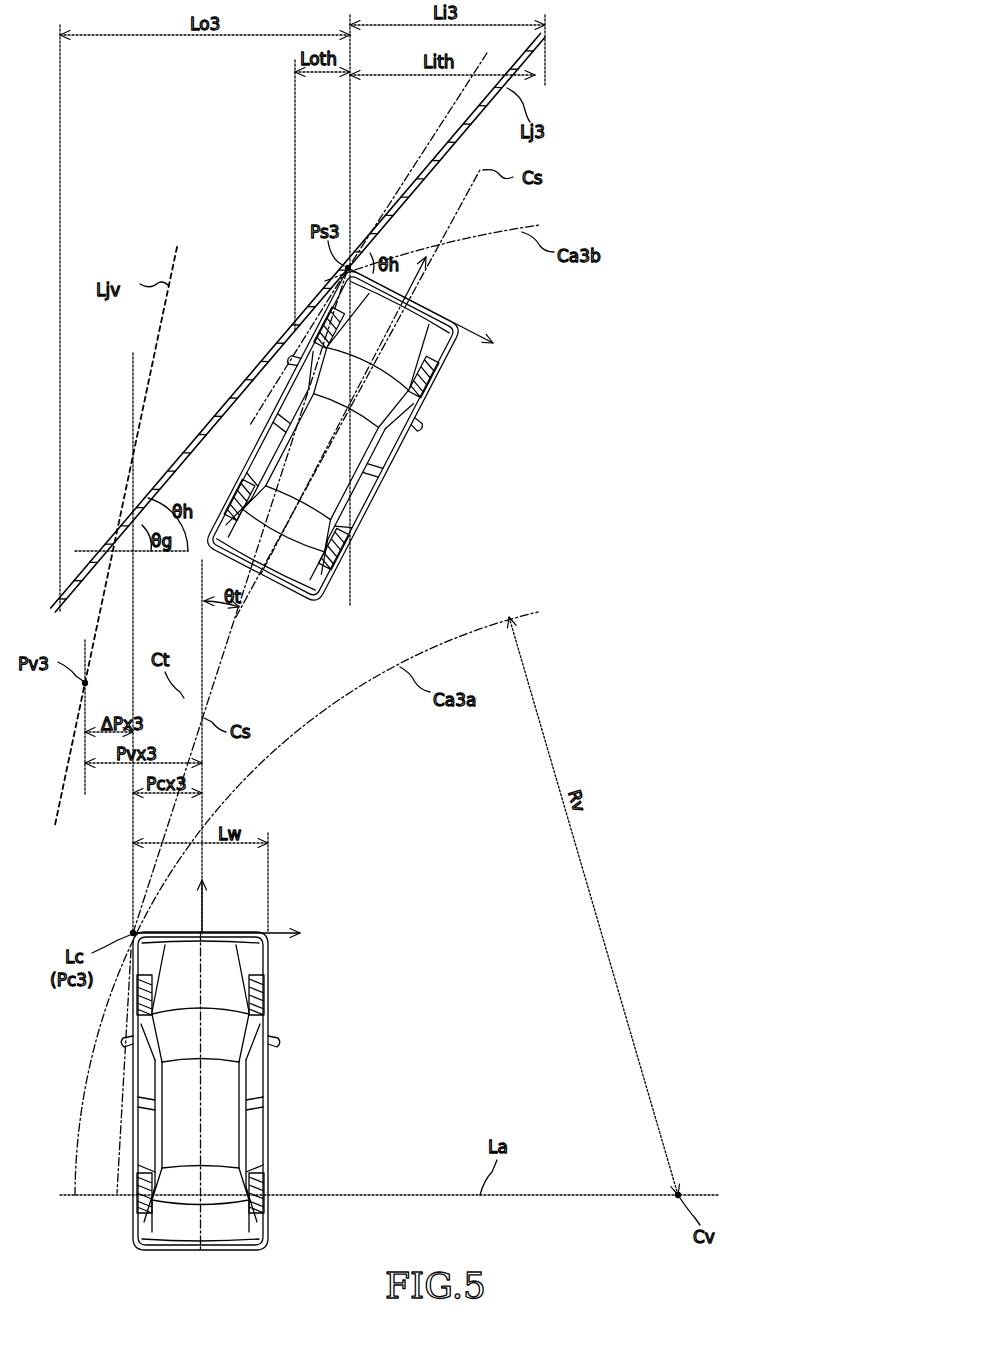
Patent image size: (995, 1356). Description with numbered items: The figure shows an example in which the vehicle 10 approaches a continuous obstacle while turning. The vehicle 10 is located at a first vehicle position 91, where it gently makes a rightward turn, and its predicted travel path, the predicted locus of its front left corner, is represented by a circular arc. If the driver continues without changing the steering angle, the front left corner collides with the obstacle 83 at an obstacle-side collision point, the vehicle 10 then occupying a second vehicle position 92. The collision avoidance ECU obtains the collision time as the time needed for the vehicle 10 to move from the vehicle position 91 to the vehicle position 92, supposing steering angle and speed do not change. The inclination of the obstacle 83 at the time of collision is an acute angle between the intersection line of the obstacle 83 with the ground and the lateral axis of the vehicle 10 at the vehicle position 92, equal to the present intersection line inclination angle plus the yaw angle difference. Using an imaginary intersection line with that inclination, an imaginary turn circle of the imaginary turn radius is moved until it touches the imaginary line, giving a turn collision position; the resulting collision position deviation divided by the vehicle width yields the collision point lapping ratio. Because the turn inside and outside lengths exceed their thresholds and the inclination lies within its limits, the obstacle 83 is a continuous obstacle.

The vehicle 10 is at (313, 753).
The obstacle 83 is at (284, 352).
The vehicle position 91 is at (284, 907).
The vehicle position 92 is at (467, 397).